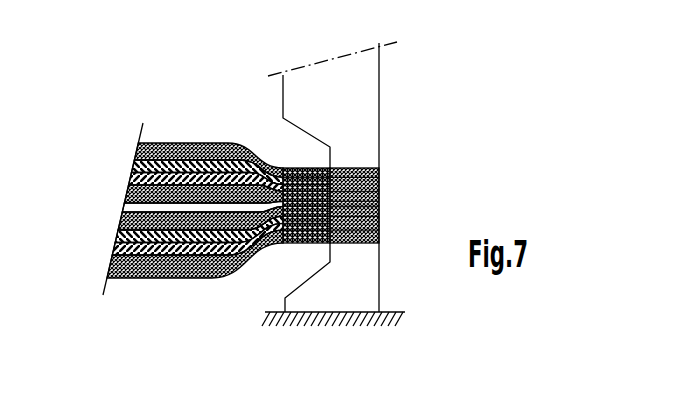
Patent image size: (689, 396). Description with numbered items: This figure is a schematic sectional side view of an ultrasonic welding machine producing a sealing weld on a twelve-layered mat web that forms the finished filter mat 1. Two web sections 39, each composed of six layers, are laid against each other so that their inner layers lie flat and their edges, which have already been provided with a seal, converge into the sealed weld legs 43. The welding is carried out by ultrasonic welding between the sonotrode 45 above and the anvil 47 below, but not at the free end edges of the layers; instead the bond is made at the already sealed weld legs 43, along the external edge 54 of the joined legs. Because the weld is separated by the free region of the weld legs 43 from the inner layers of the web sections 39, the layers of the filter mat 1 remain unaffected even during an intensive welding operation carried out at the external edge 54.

The filter mat 1 is at (226, 100).
The web section 39 is at (177, 140).
The weld legs 43 is at (310, 167).
The sonotrode 45 is at (355, 83).
The external edge 54 is at (380, 197).
The anvil 47 is at (363, 264).